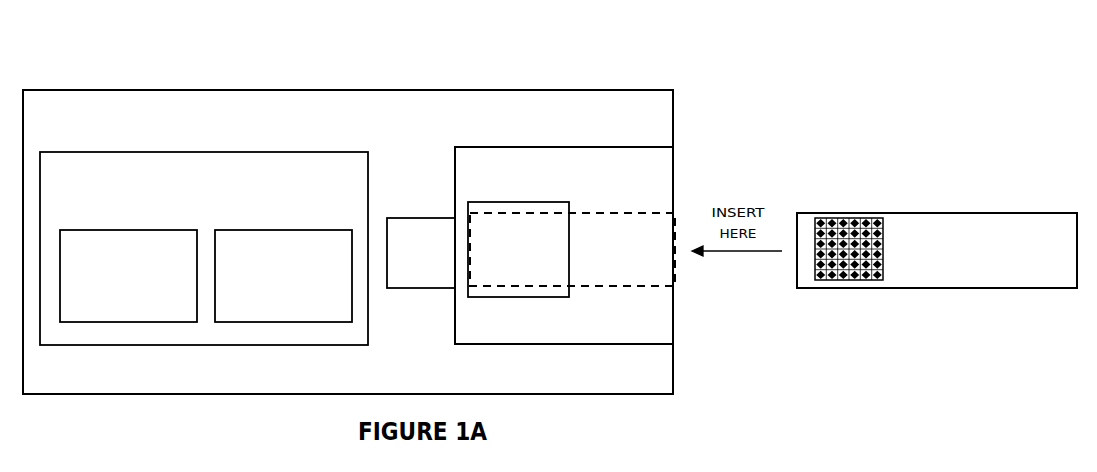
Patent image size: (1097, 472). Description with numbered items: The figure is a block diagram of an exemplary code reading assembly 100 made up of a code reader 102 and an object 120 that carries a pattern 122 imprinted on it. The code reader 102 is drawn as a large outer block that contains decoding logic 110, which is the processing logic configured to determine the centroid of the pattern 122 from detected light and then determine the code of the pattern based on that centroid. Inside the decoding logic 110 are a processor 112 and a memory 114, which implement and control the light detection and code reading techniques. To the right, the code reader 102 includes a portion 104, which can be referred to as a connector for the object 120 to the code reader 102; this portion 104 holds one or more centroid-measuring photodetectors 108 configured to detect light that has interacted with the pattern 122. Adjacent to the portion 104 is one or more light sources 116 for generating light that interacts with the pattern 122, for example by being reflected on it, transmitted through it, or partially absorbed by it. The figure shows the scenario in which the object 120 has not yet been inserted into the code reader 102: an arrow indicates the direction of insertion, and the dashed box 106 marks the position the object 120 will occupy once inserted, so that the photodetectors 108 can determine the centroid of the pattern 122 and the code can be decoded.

The code reading assembly 100 is at (778, 108).
The code reader 102 is at (166, 397).
The portion 104 is at (562, 145).
The dashed box 106 is at (599, 212).
The centroid-measuring photodetectors 108 is at (492, 199).
The decoding logic 110 is at (187, 215).
The processor 112 is at (109, 305).
The memory 114 is at (263, 305).
The light sources 116 is at (403, 266).
The object 120 is at (1007, 290).
The pattern 122 is at (864, 215).